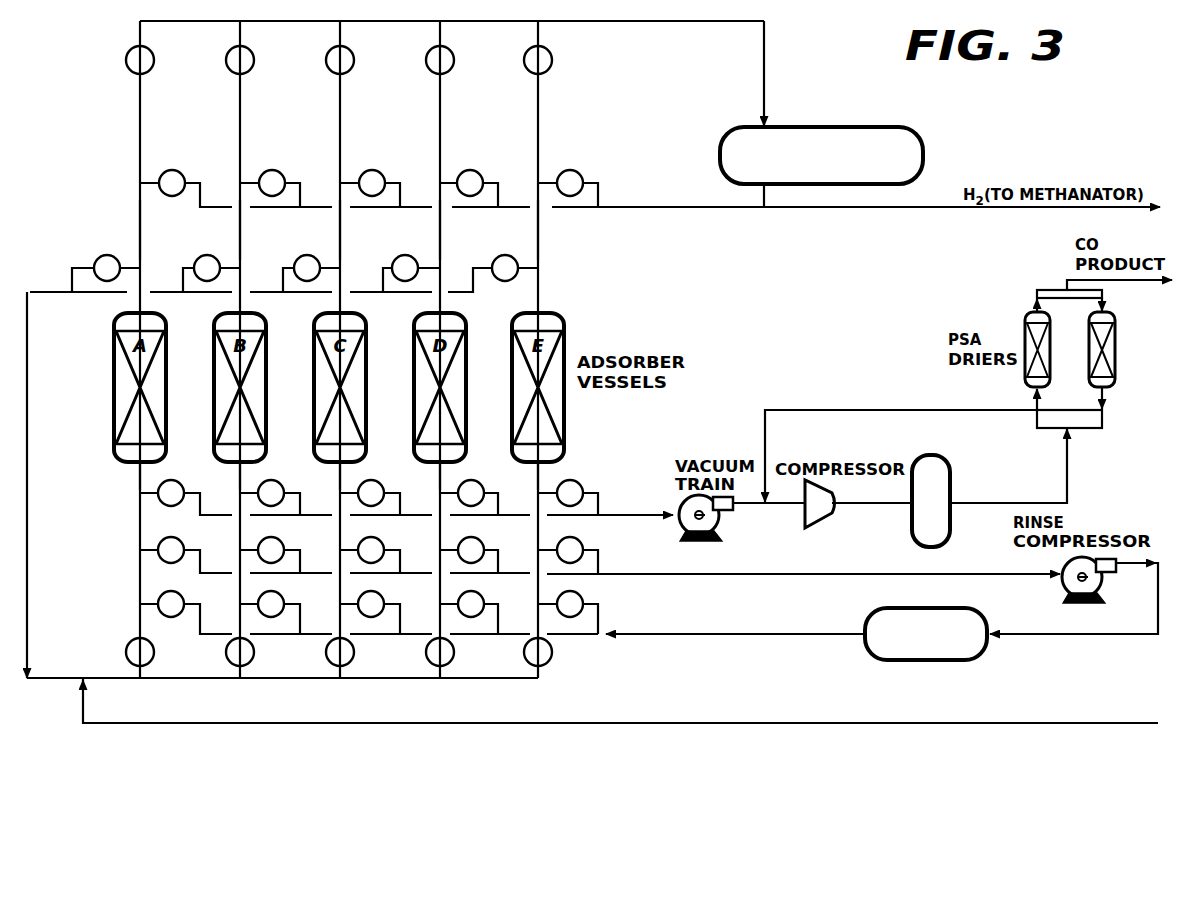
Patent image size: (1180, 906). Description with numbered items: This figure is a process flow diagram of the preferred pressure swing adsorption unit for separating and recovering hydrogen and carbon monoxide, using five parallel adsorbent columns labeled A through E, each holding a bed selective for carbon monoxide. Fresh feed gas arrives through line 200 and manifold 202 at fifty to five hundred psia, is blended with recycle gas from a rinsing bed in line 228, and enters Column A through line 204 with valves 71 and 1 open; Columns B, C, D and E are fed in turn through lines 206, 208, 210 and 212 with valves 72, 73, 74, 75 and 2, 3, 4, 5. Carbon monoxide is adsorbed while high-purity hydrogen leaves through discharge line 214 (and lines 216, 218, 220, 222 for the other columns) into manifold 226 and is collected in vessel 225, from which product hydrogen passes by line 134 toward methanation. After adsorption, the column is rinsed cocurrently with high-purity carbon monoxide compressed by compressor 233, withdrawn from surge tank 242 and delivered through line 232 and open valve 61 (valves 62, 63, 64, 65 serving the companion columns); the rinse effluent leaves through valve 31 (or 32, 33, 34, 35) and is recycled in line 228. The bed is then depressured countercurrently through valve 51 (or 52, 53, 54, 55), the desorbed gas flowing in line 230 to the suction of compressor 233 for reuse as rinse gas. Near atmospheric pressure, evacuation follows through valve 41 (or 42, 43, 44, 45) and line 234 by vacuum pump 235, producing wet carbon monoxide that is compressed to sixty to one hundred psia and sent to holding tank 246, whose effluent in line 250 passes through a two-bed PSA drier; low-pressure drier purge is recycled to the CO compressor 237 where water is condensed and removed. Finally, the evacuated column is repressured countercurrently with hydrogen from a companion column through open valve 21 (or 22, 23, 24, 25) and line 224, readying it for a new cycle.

The valve 1 is at (155, 63).
The valve 2 is at (255, 63).
The valve 3 is at (355, 63).
The valve 4 is at (455, 63).
The valve 5 is at (553, 63).
The valve 21 is at (184, 176).
The valve 22 is at (284, 176).
The valve 23 is at (384, 176).
The valve 24 is at (482, 176).
The valve 25 is at (582, 176).
The valve 31 is at (100, 256).
The valve 32 is at (200, 258).
The valve 33 is at (300, 258).
The valve 34 is at (398, 258).
The valve 35 is at (498, 258).
The valve 41 is at (185, 490).
The valve 42 is at (285, 490).
The valve 43 is at (385, 490).
The valve 44 is at (485, 490).
The valve 45 is at (580, 487).
The valve 51 is at (185, 547).
The valve 52 is at (285, 547).
The valve 53 is at (385, 547).
The valve 54 is at (485, 547).
The valve 55 is at (585, 547).
The valve 61 is at (185, 601).
The valve 62 is at (285, 601).
The valve 63 is at (385, 601).
The valve 64 is at (485, 601).
The valve 65 is at (585, 601).
The valve 71 is at (155, 654).
The valve 72 is at (255, 654).
The valve 73 is at (355, 654).
The valve 74 is at (455, 654).
The valve 75 is at (553, 654).
The line 134 is at (1064, 209).
The line 200 is at (606, 722).
The manifold 202 is at (265, 680).
The line 204 is at (136, 484).
The line 206 is at (238, 475).
The line 208 is at (338, 475).
The line 210 is at (438, 475).
The line 212 is at (536, 475).
The discharge line 214 is at (144, 223).
The discharge line 216 is at (244, 223).
The discharge line 218 is at (344, 223).
The discharge line 220 is at (444, 223).
The discharge line 222 is at (542, 223).
The line 224 is at (718, 208).
The vessel 225 is at (838, 168).
The manifold 226 is at (768, 76).
The line 228 is at (30, 549).
The line 230 is at (768, 580).
The line 232 is at (726, 632).
The compressor 233 is at (1102, 586).
The line 234 is at (615, 515).
The vacuum pump 235 is at (721, 529).
The CO compressor 237 is at (822, 522).
The surge tank 242 is at (946, 646).
The holding tank 246 is at (945, 457).
The line 250 is at (1069, 472).